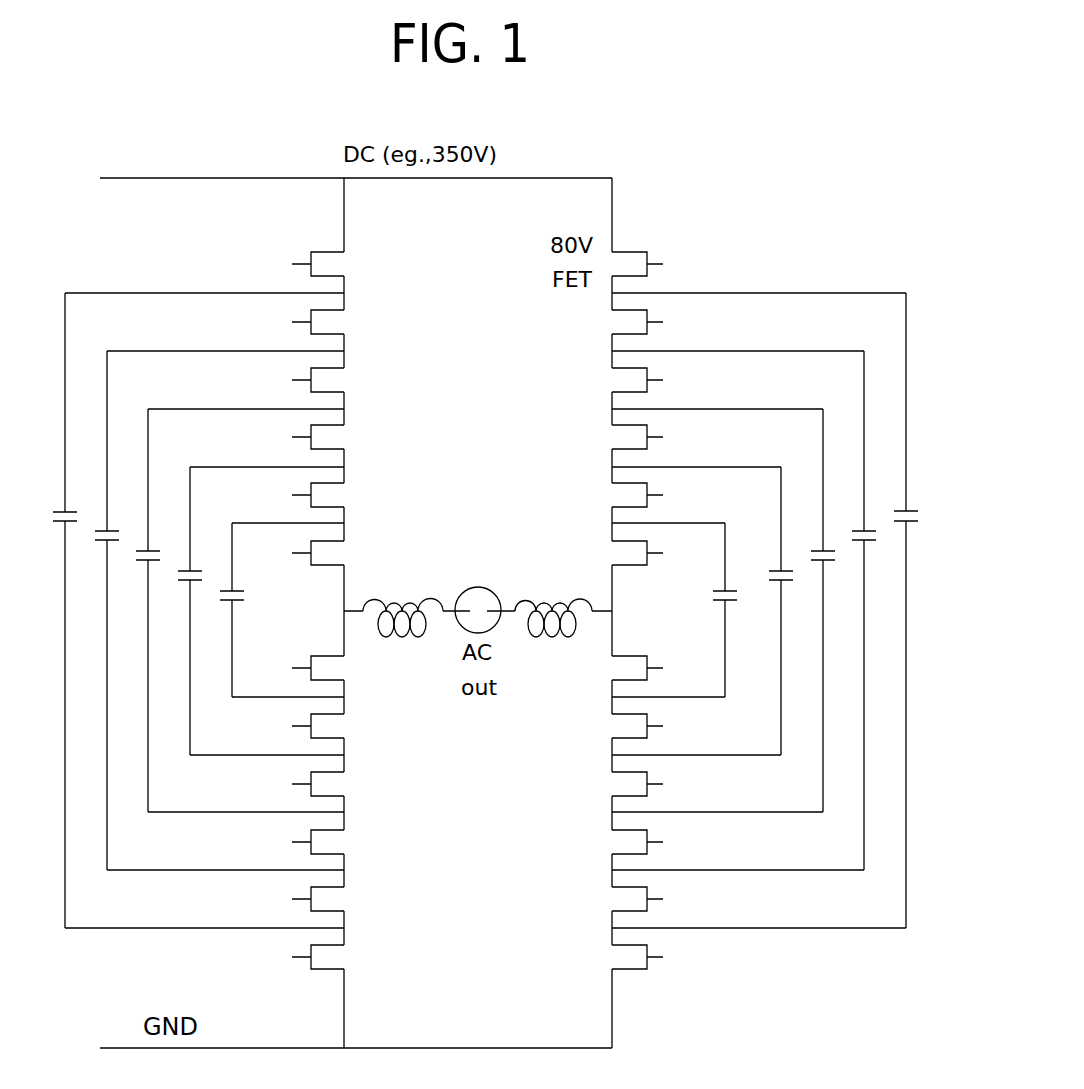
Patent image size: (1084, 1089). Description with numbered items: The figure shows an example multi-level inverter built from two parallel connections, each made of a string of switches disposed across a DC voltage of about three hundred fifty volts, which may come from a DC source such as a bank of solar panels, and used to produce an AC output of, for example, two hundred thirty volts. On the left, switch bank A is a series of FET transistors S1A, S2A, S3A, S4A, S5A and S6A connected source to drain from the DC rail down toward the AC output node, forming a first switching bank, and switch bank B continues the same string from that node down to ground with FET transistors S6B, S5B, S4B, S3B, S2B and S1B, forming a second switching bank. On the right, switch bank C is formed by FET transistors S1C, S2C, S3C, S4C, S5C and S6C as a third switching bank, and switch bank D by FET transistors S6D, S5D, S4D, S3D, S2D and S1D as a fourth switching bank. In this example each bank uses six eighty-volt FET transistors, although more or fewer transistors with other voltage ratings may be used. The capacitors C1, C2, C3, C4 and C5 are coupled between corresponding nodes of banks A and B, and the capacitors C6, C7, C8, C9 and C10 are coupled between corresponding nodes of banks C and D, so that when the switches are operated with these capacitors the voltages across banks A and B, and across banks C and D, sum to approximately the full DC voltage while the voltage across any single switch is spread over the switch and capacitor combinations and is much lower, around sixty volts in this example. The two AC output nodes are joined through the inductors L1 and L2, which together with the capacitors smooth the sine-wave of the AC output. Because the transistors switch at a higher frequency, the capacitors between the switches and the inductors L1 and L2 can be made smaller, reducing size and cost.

The capacitor C1 is at (76, 610).
The capacitor C2 is at (118, 610).
The capacitor C3 is at (159, 610).
The capacitor C4 is at (201, 611).
The capacitor C5 is at (243, 610).
The capacitor C6 is at (917, 610).
The capacitor C7 is at (874, 610).
The capacitor C8 is at (833, 610).
The capacitor C9 is at (791, 611).
The capacitor C10 is at (741, 610).
The inductor L1 is at (405, 598).
The inductor L2 is at (553, 597).
The FET transistor S1A is at (351, 265).
The FET transistor S2A is at (351, 323).
The FET transistor S3A is at (351, 381).
The FET transistor S4A is at (351, 438).
The FET transistor S5A is at (351, 496).
The FET transistor S6A is at (351, 554).
The FET transistor S1B is at (412, 940).
The FET transistor S2B is at (412, 882).
The FET transistor S3B is at (412, 825).
The FET transistor S4B is at (412, 767).
The FET transistor S5B is at (412, 709).
The FET transistor S6B is at (412, 651).
The FET transistor S1C is at (665, 265).
The FET transistor S2C is at (665, 323).
The FET transistor S3C is at (665, 381).
The FET transistor S4C is at (665, 438).
The FET transistor S5C is at (665, 496).
The FET transistor S6C is at (660, 554).
The FET transistor S1D is at (666, 958).
The FET transistor S2D is at (666, 900).
The FET transistor S3D is at (666, 843).
The FET transistor S4D is at (666, 785).
The FET transistor S5D is at (666, 727).
The FET transistor S6D is at (661, 669).